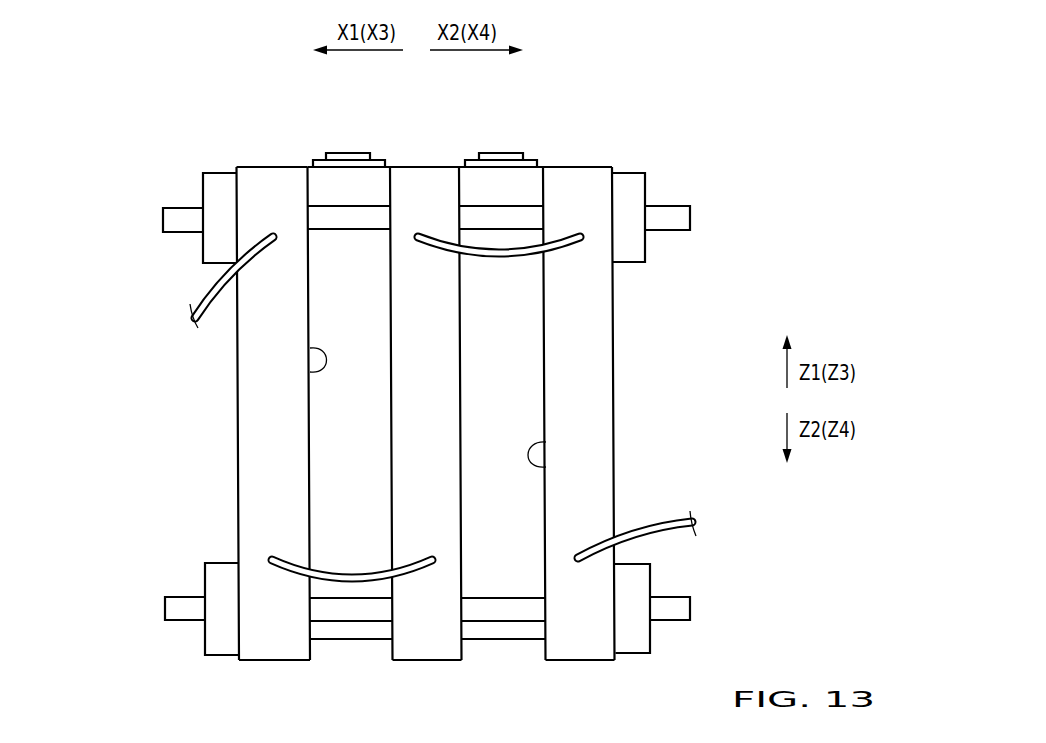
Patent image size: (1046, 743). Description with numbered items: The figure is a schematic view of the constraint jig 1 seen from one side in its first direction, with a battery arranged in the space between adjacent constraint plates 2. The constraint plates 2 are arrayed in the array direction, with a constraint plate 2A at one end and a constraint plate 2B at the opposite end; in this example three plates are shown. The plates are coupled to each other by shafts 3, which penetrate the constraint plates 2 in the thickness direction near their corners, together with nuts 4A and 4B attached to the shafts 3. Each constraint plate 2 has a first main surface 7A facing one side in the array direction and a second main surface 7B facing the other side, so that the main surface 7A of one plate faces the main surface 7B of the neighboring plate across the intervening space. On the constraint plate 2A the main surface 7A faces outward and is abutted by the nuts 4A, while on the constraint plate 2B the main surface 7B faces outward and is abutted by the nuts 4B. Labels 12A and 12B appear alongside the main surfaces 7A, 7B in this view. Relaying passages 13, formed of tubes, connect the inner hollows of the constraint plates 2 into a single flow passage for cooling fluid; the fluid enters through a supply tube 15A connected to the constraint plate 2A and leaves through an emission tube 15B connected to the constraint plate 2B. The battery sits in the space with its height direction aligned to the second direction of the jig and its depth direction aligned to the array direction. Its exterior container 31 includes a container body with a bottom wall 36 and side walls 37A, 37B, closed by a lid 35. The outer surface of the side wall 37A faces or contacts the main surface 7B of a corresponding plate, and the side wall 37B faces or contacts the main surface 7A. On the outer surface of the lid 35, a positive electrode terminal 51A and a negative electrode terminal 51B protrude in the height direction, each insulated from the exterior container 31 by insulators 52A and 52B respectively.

The constraint jig 1 is at (700, 100).
The constraint plate 2 is at (425, 413).
The constraint plate 2A is at (262, 402).
The constraint plate 2B is at (589, 297).
The shaft 3 is at (349, 217).
The nut 4A is at (213, 192).
The nut 4B is at (633, 190).
The main surface 7A is at (414, 436).
The main surface 7B is at (435, 354).
The first holding surface 12A is at (547, 467).
The second holding surface 12B is at (310, 372).
The relaying passage 13 is at (503, 258).
The supply tube 15A is at (213, 298).
The emission tube 15B is at (660, 522).
The exterior container 31 is at (361, 432).
The lid 35 is at (387, 165).
The bottom wall 36 is at (373, 597).
The side wall 37A is at (460, 332).
The side wall 37B is at (547, 395).
The positive electrode terminal 51A is at (466, 109).
The negative electrode terminal 51B is at (347, 153).
The insulator 52A is at (402, 128).
The insulator 52B is at (318, 162).